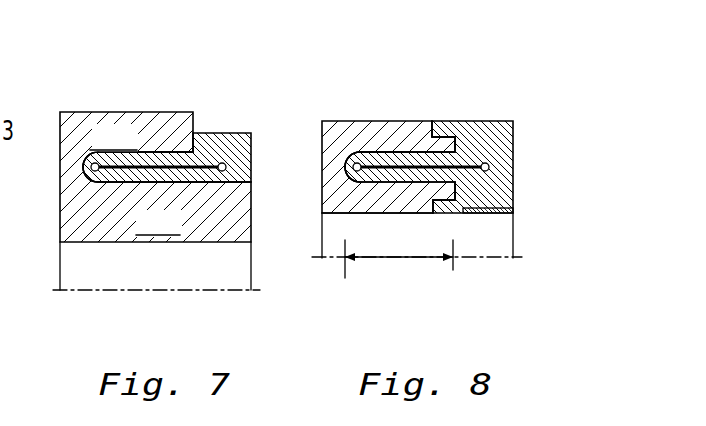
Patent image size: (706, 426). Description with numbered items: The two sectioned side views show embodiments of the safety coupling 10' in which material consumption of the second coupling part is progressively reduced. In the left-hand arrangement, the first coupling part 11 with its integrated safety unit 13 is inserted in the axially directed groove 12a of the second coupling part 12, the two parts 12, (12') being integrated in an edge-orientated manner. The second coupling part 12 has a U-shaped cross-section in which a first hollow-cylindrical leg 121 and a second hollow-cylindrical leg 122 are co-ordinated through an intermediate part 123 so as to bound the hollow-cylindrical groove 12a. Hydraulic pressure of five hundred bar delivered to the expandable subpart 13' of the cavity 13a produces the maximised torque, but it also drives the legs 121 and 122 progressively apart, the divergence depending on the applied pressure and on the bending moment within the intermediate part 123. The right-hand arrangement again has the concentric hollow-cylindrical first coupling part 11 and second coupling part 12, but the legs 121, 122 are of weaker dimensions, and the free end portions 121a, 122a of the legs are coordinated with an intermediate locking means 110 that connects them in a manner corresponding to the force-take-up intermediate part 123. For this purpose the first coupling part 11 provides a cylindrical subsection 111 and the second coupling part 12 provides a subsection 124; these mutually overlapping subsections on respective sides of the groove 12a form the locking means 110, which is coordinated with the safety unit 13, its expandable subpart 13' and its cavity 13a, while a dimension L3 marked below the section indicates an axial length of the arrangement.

In FIG. 7, the safety coupling 10' is at (156, 156).
In FIG. 8, the safety coupling 10' is at (451, 198).
In FIG. 7, the first coupling part 11 is at (217, 133).
In FIG. 8, the first coupling part 11 is at (518, 134).
In FIG. 7, the second coupling part 12 is at (152, 136).
In FIG. 8, the second coupling part 12 is at (388, 137).
In FIG. 7, the second coupling part (edge-oriented integration) 12' is at (155, 282).
In FIG. 7, the axially directed groove 12a is at (147, 150).
In FIG. 8, the axially directed groove 12a is at (363, 148).
In FIG. 7, the safety unit 13 is at (199, 123).
In FIG. 7, the expandable subpart 13' is at (128, 249).
In FIG. 7, the cavity 13a is at (215, 175).
In FIG. 7, the first hollow-cylindrical leg 121 is at (141, 138).
In FIG. 8, the first hollow-cylindrical leg 121 is at (407, 137).
In FIG. 8, the free end portion of first leg 121a is at (448, 110).
In FIG. 7, the second hollow-cylindrical leg 122 is at (174, 210).
In FIG. 8, the second hollow-cylindrical leg 122 is at (344, 204).
In FIG. 8, the free end portion of second leg 122a is at (413, 207).
In FIG. 7, the intermediate part 123 is at (61, 168).
In FIG. 8, the intermediate part 123 is at (323, 172).
In FIG. 8, the subsection of second coupling part 124 is at (458, 217).
In FIG. 8, the intermediate locking means 110 is at (493, 187).
In FIG. 8, the subsection of first coupling part 111 is at (513, 210).
In FIG. 8, the length dimension L3 is at (399, 273).